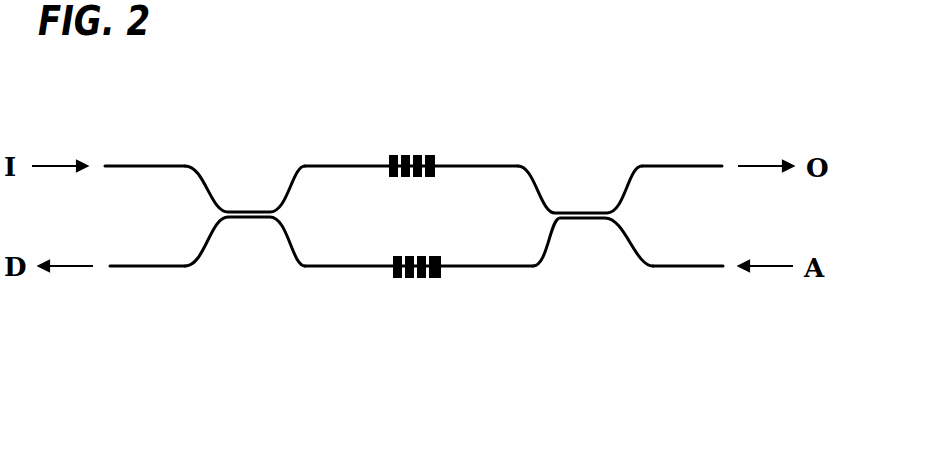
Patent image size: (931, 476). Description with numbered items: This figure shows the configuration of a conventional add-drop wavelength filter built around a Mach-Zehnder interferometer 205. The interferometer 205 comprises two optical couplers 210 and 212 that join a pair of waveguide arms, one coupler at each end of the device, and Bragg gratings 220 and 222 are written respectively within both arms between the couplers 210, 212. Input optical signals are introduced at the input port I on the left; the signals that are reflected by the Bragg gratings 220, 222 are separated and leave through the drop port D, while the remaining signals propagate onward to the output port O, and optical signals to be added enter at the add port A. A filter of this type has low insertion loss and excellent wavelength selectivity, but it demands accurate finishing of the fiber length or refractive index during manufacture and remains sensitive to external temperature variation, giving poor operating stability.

The Mach-Zehnder interferometer 205 is at (498, 152).
The optical coupler 210 is at (250, 218).
The optical coupler 212 is at (582, 222).
The Bragg grating 220 is at (410, 155).
The Bragg grating 222 is at (418, 278).